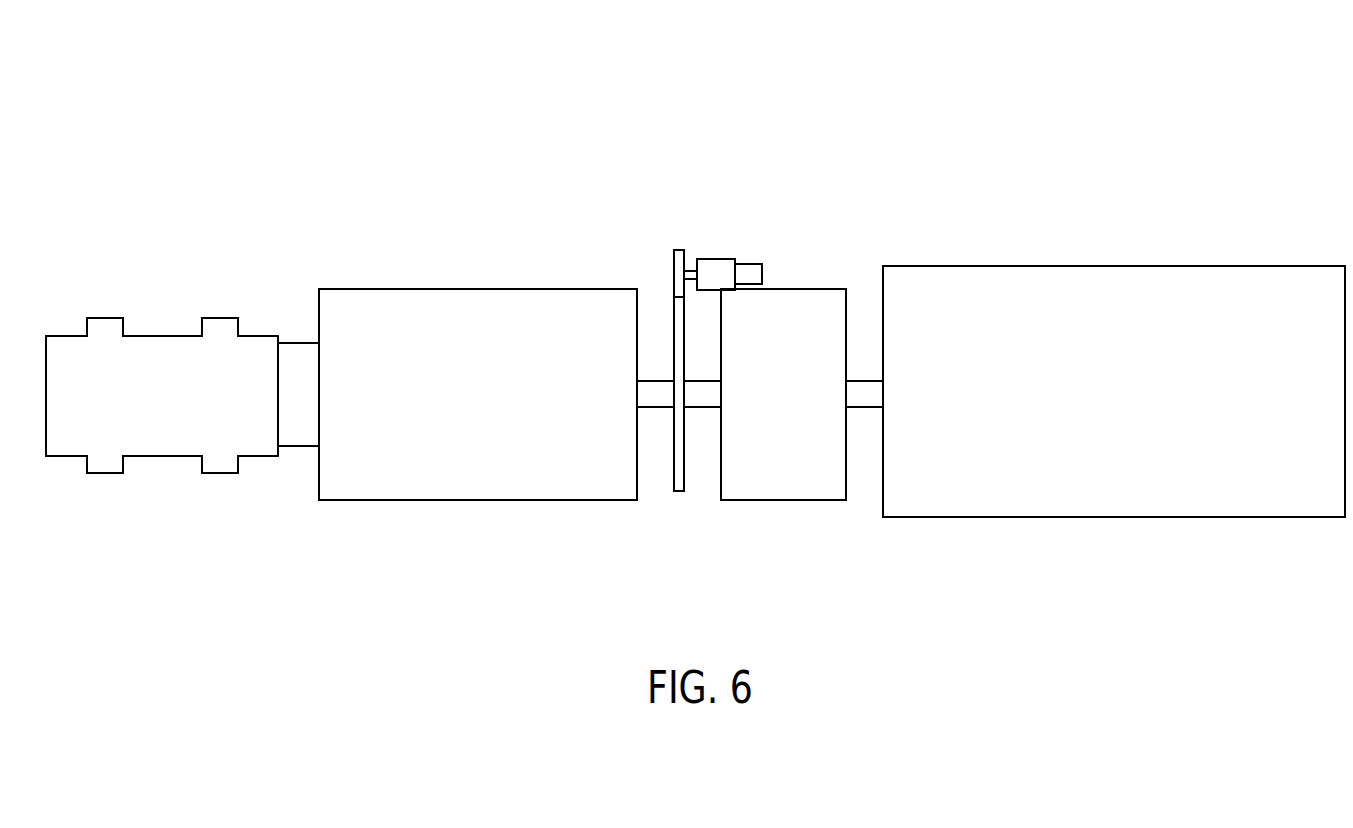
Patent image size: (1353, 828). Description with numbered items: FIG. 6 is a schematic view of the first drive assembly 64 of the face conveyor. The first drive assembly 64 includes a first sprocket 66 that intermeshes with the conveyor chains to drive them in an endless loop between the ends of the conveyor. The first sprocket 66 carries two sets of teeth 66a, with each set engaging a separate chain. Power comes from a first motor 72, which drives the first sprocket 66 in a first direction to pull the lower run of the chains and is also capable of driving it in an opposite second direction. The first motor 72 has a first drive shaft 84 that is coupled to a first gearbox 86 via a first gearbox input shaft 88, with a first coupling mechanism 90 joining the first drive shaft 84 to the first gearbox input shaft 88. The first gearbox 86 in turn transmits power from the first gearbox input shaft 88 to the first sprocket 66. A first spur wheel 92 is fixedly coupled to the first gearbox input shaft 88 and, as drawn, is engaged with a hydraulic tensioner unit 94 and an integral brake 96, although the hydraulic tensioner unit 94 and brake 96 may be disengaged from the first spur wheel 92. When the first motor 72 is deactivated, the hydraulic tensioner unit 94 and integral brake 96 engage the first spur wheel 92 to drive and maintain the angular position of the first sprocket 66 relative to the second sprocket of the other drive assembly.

The first drive assembly 64 is at (880, 104).
The first sprocket 66 is at (176, 277).
The teeth 66a is at (108, 322).
The first motor 72 is at (1080, 280).
The first drive shaft 84 is at (877, 397).
The first gearbox 86 is at (520, 300).
The first gearbox input shaft 88 is at (661, 395).
The first coupling mechanism 90 is at (805, 300).
The first spur wheel 92 is at (679, 491).
The hydraulic tensioner unit 94 is at (672, 272).
The brake 96 is at (718, 270).